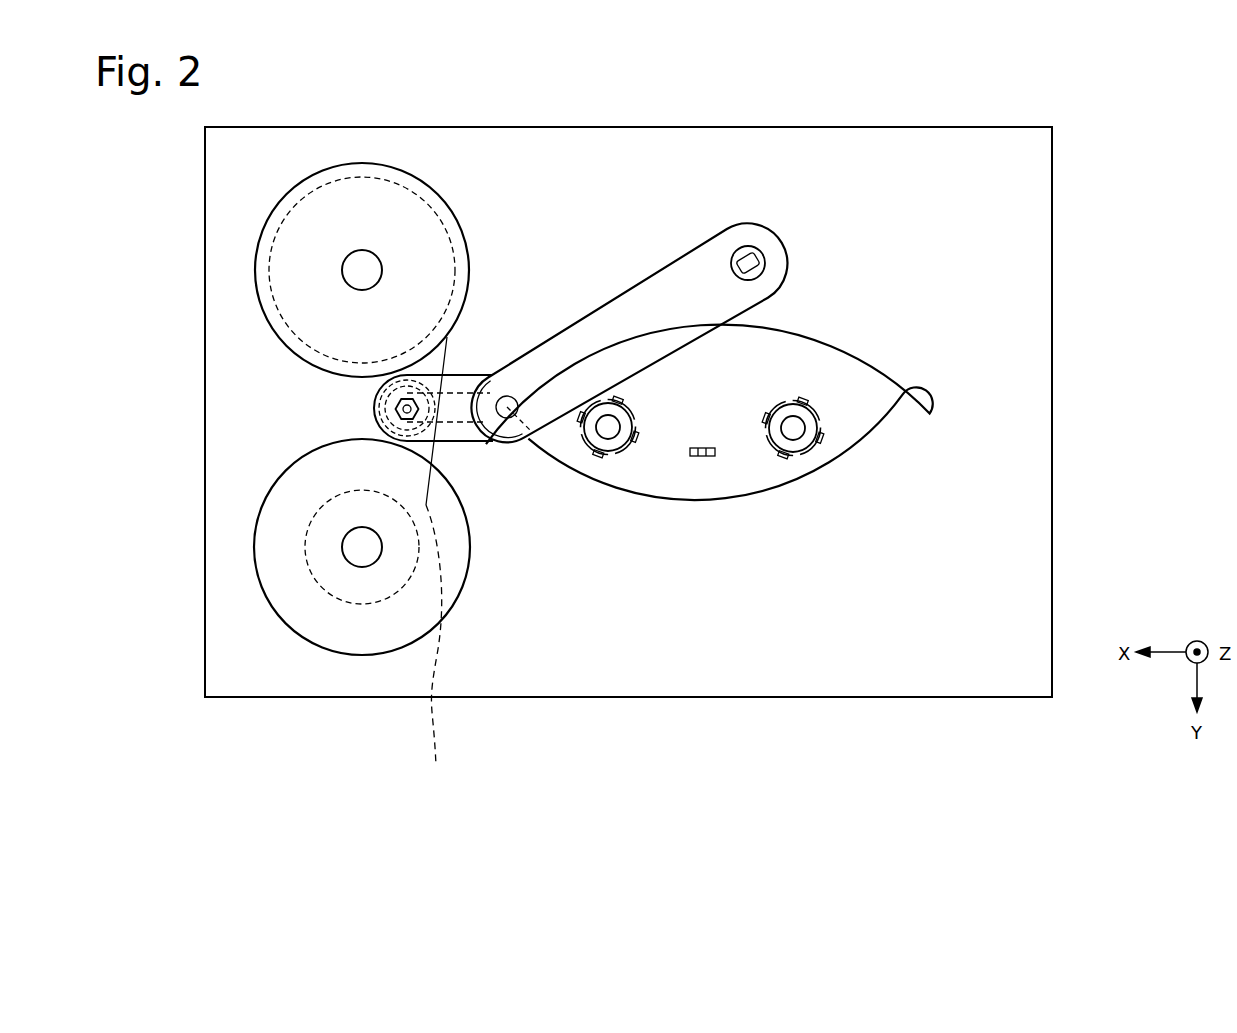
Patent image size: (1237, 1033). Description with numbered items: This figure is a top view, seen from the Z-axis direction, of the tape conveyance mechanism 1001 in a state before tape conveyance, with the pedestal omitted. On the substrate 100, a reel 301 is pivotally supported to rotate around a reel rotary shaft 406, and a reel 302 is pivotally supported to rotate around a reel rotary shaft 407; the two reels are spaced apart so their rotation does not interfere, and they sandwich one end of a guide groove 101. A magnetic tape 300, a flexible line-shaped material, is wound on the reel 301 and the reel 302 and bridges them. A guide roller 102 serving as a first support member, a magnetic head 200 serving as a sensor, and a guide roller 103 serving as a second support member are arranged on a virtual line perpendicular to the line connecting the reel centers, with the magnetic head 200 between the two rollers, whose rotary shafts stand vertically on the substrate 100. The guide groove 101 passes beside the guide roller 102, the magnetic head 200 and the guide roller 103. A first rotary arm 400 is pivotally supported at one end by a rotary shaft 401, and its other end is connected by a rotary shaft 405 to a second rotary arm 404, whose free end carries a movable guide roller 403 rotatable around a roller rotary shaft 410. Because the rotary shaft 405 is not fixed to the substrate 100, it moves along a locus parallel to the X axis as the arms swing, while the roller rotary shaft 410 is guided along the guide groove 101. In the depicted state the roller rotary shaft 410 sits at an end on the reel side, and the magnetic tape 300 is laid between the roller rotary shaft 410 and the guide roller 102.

The substrate 100 is at (1052, 157).
The tape conveyance mechanism 1001 is at (1066, 250).
The guide groove 101 is at (810, 508).
The guide roller 102 is at (614, 455).
The guide roller 103 is at (800, 403).
The magnetic head 200 is at (703, 458).
The magnetic tape 300 is at (438, 564).
The reel 301 is at (294, 184).
The reel 302 is at (348, 655).
The first rotary arm 400 is at (582, 321).
The rotary shaft 401 is at (748, 246).
The movable guide roller 403 is at (375, 419).
The second rotary arm 404 is at (466, 436).
The rotary shaft 405 is at (507, 396).
The reel rotary shaft 406 is at (358, 272).
The reel rotary shaft 407 is at (356, 547).
The roller rotary shaft 410 is at (396, 408).